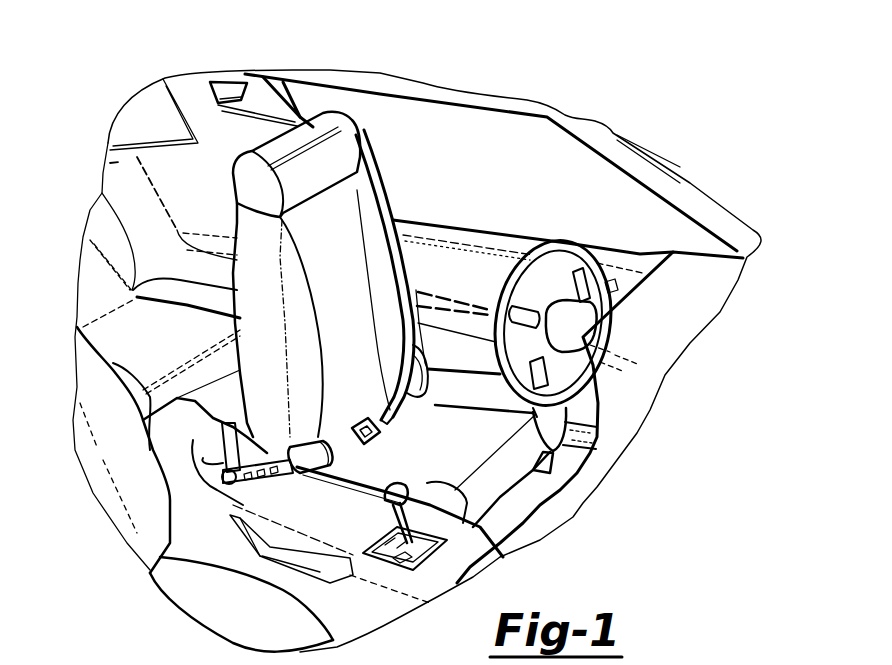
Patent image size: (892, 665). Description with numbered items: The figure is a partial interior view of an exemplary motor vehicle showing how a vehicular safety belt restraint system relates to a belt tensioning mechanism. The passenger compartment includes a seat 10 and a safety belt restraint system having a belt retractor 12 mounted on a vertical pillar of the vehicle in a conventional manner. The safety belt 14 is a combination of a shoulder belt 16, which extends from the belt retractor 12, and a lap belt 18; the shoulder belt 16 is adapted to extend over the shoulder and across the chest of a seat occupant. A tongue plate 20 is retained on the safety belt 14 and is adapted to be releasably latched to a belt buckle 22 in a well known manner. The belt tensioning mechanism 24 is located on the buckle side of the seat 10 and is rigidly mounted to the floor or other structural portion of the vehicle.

The seat 10 is at (345, 262).
The belt retractor 12 is at (233, 90).
The safety belt 14 is at (408, 285).
The shoulder belt 16 is at (300, 118).
The lap belt 18 is at (407, 395).
The tongue plate 20 is at (377, 437).
The belt buckle 22 is at (325, 478).
The belt tensioning mechanism 24 is at (260, 437).